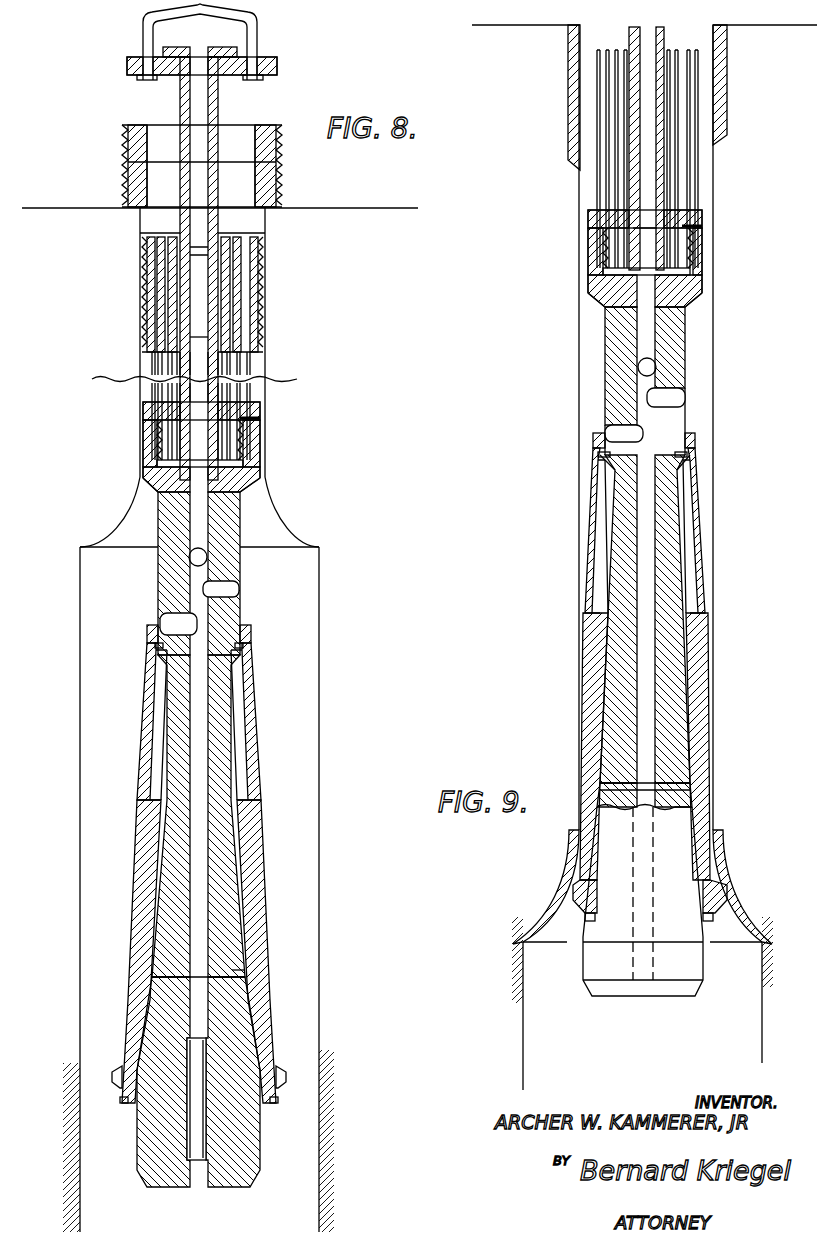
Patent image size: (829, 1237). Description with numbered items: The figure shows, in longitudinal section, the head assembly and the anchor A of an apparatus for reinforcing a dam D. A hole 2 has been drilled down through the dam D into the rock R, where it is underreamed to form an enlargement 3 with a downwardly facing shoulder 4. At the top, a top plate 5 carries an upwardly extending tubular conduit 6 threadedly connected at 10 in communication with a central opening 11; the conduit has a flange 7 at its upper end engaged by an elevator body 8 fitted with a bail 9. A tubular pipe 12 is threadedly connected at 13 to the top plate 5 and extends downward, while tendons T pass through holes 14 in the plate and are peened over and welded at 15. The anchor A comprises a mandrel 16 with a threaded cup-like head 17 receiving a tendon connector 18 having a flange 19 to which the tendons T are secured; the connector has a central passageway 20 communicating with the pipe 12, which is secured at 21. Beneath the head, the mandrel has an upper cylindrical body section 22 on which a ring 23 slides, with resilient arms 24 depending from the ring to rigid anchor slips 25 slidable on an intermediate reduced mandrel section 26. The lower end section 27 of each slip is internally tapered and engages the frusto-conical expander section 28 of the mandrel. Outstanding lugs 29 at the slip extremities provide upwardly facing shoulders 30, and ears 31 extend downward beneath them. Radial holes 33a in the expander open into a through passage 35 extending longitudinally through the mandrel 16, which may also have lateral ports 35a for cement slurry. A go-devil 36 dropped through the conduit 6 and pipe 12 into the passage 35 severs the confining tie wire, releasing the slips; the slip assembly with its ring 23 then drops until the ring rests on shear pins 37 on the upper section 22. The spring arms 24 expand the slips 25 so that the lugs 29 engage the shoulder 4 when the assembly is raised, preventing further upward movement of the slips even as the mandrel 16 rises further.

In FIG. 8, the drilled hole 2 is at (144, 208).
In FIG. 9, the drilled hole 2 is at (712, 363).
In FIG. 8, the underreamed enlargement 3 is at (320, 674).
In FIG. 9, the underreamed enlargement 3 is at (526, 1047).
In FIG. 8, the downwardly facing shoulder 4 is at (296, 526).
In FIG. 9, the downwardly facing shoulder 4 is at (546, 909).
In FIG. 8, the top plate 5 is at (258, 302).
In FIG. 8, the tubular conduit 6 is at (219, 102).
In FIG. 8, the flange 7 is at (234, 52).
In FIG. 8, the elevator body 8 is at (278, 66).
In FIG. 8, the bail 9 is at (155, 50).
In FIG. 8, the threaded connection 10 is at (209, 247).
In FIG. 8, the central opening 11 is at (198, 314).
In FIG. 8, the tubular conduit or pipe 12 is at (199, 368).
In FIG. 9, the tubular conduit or pipe 12 is at (649, 100).
In FIG. 8, the threaded connection 13 is at (219, 344).
In FIG. 8, the holes 14 is at (164, 333).
In FIG. 8, the peened and welded connection 15 is at (154, 237).
In FIG. 8, the mandrel 16 is at (149, 585).
In FIG. 9, the mandrel 16 is at (599, 334).
In FIG. 8, the cup-like head 17 is at (250, 452).
In FIG. 9, the cup-like head 17 is at (698, 262).
In FIG. 8, the tendon connector 18 is at (150, 445).
In FIG. 9, the tendon connector 18 is at (600, 258).
In FIG. 8, the flange 19 is at (142, 413).
In FIG. 9, the flange 19 is at (703, 216).
In FIG. 8, the central passageway 20 is at (146, 477).
In FIG. 9, the central passageway 20 is at (646, 271).
In FIG. 8, the threaded connection 21 is at (219, 411).
In FIG. 9, the threaded connection 21 is at (633, 218).
In FIG. 8, the upper cylindrical body section 22 is at (167, 523).
In FIG. 9, the upper cylindrical body section 22 is at (671, 314).
In FIG. 8, the ring 23 is at (249, 627).
In FIG. 9, the ring 23 is at (698, 442).
In FIG. 8, the resilient arms 24 is at (146, 708).
In FIG. 9, the resilient arms 24 is at (592, 547).
In FIG. 8, the anchor slips 25 is at (140, 872).
In FIG. 9, the anchor slips 25 is at (588, 633).
In FIG. 8, the intermediate reduced mandrel section 26 is at (214, 742).
In FIG. 9, the intermediate reduced mandrel section 26 is at (665, 567).
In FIG. 8, the lower end section 27 is at (258, 996).
In FIG. 9, the lower end section 27 is at (698, 800).
In FIG. 8, the expander section 28 is at (224, 1023).
In FIG. 9, the expander section 28 is at (674, 757).
In FIG. 8, the lugs 29 is at (113, 1078).
In FIG. 9, the lugs 29 is at (717, 889).
In FIG. 8, the upwardly facing shoulders 30 is at (280, 1068).
In FIG. 8, the ears 31 is at (272, 1105).
In FIG. 9, the ears 31 is at (712, 918).
In FIG. 8, the radial holes 33a is at (230, 970).
In FIG. 8, the through passage 35 is at (190, 787).
In FIG. 9, the through passage 35 is at (652, 697).
In FIG. 8, the lateral ports 35a is at (250, 590).
In FIG. 9, the lateral ports 35a is at (682, 401).
In FIG. 8, the go-devil 36 is at (194, 1142).
In FIG. 8, the shear pins 37 is at (155, 645).
In FIG. 9, the shear pins 37 is at (598, 455).
In FIG. 8, the anchor A is at (289, 789).
In FIG. 9, the anchor A is at (721, 486).
In FIG. 8, the dam D is at (322, 203).
In FIG. 8, the rock R is at (321, 1160).
In FIG. 9, the rock R is at (512, 963).
In FIG. 8, the tendons T is at (252, 390).
In FIG. 9, the tendons T is at (677, 163).